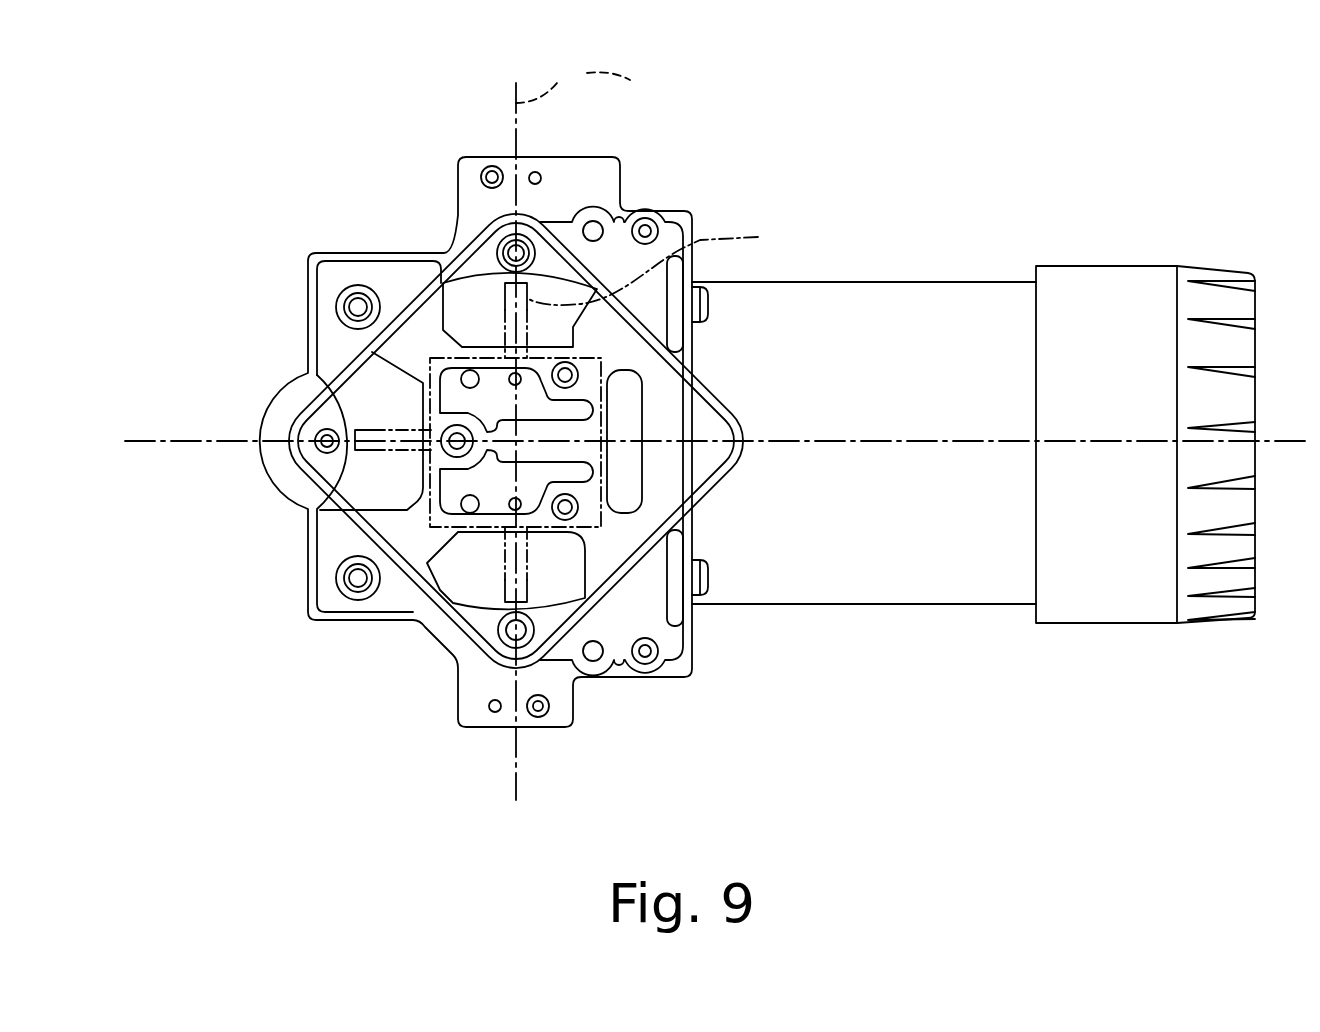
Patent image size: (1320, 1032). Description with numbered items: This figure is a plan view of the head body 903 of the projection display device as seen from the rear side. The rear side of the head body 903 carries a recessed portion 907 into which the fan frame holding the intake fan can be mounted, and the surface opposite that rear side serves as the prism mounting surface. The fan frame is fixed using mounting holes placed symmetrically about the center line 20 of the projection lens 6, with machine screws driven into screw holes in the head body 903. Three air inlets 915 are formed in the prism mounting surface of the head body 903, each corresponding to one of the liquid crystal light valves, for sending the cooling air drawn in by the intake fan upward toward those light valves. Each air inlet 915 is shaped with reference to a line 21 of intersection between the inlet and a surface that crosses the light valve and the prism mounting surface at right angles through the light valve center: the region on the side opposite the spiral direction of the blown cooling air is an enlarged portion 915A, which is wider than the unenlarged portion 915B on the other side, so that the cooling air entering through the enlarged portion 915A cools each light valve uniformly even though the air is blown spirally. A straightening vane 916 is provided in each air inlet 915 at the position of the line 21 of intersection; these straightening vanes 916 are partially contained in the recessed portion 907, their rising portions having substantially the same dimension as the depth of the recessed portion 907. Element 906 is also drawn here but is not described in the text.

The projection lens 6 is at (975, 297).
The center line 20 is at (935, 443).
The line of intersection 21 is at (605, 173).
The head body 903 is at (665, 263).
The fixing screw 906 is at (490, 163).
The recessed portion 907 is at (497, 250).
The air inlet 915 is at (477, 290).
The enlarged portion 915A is at (375, 373).
The unenlarged portion 915B is at (462, 308).
The straightening vane 916 is at (373, 420).